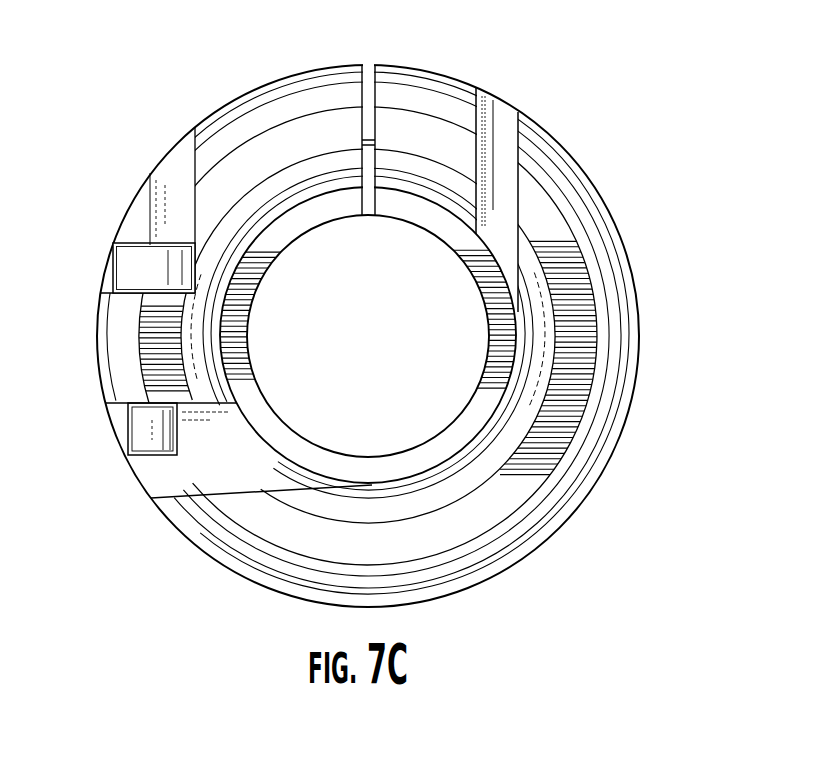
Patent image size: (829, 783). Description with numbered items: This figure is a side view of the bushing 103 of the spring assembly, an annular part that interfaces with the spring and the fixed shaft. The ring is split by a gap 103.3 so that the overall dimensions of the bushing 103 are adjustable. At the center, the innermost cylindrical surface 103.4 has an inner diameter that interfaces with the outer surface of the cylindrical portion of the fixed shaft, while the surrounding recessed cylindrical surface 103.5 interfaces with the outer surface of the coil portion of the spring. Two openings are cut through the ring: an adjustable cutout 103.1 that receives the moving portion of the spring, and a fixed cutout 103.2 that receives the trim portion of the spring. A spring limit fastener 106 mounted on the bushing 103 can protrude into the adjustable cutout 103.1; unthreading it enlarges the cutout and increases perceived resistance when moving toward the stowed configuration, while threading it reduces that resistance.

The bushing 103 is at (665, 127).
The adjustable cutout 103.1 is at (200, 480).
The fixed cutout 103.2 is at (503, 118).
The gap 103.3 is at (367, 72).
The innermost cylindrical surface 103.4 is at (327, 218).
The recessed cylindrical surface 103.5 is at (450, 458).
The spring limit fastener 106 is at (143, 440).